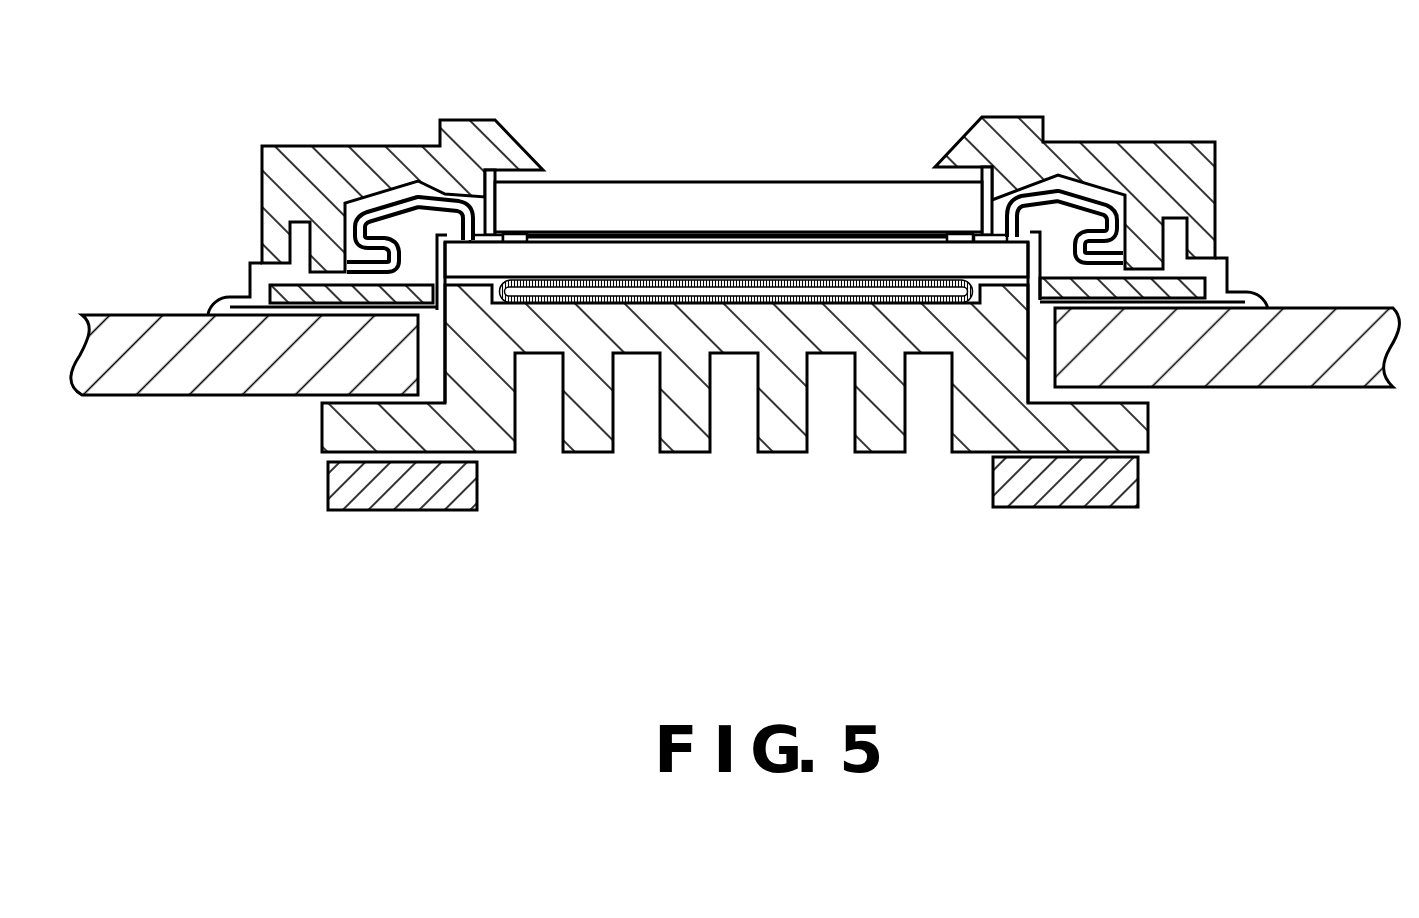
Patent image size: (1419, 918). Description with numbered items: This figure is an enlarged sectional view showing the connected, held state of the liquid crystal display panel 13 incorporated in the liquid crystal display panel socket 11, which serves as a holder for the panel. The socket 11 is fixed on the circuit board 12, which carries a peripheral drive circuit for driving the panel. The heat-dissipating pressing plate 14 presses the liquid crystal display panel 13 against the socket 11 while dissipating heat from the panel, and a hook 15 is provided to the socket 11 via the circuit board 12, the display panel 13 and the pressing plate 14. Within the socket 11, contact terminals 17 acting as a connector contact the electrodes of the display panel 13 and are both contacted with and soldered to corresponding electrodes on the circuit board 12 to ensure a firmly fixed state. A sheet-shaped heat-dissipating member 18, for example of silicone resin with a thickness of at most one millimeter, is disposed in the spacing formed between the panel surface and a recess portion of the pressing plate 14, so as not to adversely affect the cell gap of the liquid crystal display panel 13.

The liquid crystal display panel socket 11 is at (325, 173).
The circuit board 12 is at (185, 375).
The liquid crystal display panel 13 is at (645, 262).
The heat-dissipating pressing plate 14 is at (593, 433).
The hook 15 is at (418, 495).
The contact terminals 17 is at (1077, 212).
The heat-dissipating member 18 is at (838, 290).